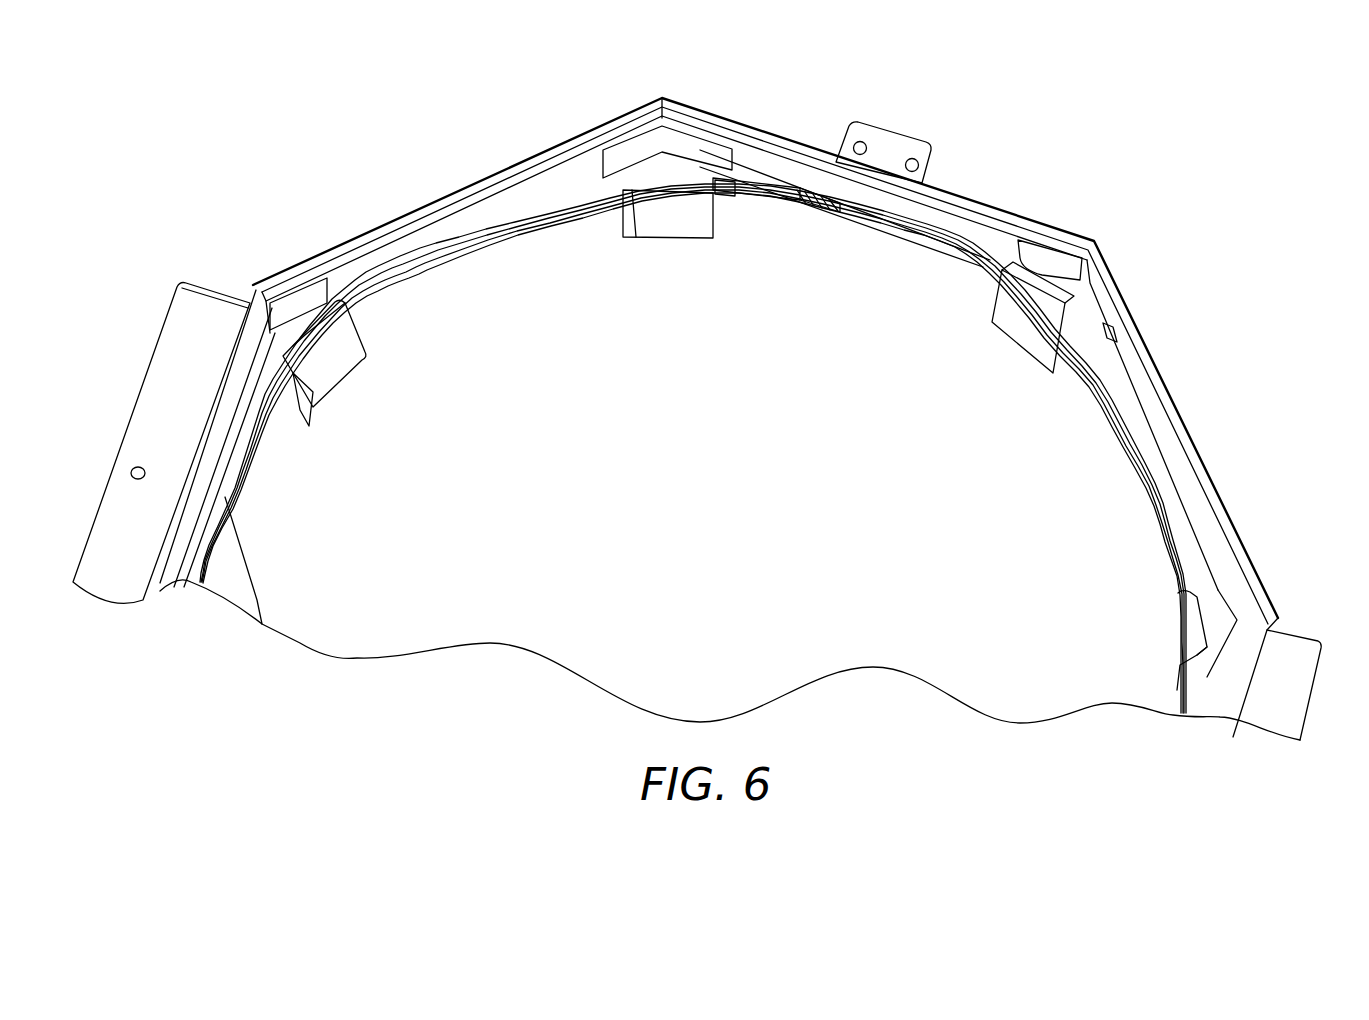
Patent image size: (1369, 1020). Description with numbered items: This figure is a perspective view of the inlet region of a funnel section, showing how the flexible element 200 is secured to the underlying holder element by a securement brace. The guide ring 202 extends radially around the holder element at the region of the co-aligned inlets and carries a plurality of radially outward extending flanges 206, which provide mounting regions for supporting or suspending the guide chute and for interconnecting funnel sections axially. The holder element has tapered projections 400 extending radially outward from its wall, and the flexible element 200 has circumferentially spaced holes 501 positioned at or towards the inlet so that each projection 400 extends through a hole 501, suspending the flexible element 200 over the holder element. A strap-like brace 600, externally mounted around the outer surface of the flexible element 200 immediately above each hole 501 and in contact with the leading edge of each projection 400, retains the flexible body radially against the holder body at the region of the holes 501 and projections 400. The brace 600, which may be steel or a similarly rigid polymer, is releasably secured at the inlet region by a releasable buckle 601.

The flexible element 200 is at (697, 419).
The guide ring 202 is at (992, 233).
The flanges 206 is at (892, 145).
The projections 400 is at (343, 373).
The holes 501 is at (300, 423).
The brace 600 is at (495, 227).
The releasable buckle 601 is at (802, 207).